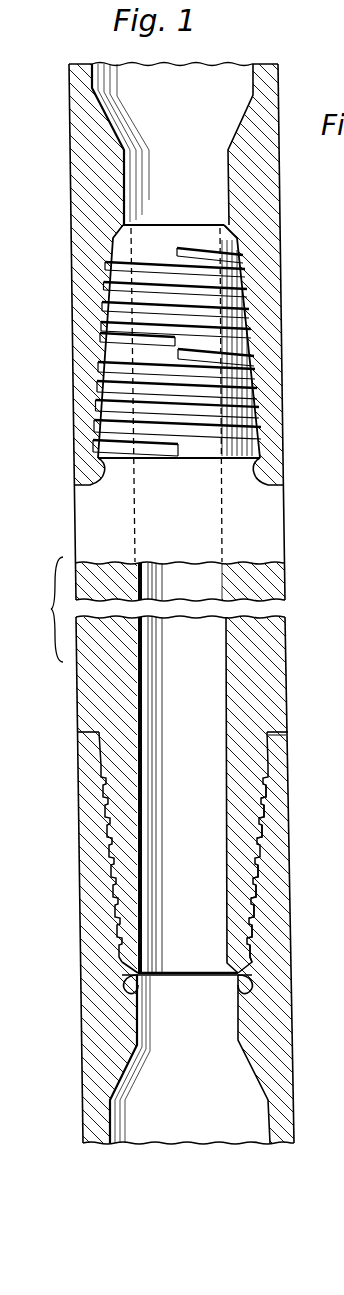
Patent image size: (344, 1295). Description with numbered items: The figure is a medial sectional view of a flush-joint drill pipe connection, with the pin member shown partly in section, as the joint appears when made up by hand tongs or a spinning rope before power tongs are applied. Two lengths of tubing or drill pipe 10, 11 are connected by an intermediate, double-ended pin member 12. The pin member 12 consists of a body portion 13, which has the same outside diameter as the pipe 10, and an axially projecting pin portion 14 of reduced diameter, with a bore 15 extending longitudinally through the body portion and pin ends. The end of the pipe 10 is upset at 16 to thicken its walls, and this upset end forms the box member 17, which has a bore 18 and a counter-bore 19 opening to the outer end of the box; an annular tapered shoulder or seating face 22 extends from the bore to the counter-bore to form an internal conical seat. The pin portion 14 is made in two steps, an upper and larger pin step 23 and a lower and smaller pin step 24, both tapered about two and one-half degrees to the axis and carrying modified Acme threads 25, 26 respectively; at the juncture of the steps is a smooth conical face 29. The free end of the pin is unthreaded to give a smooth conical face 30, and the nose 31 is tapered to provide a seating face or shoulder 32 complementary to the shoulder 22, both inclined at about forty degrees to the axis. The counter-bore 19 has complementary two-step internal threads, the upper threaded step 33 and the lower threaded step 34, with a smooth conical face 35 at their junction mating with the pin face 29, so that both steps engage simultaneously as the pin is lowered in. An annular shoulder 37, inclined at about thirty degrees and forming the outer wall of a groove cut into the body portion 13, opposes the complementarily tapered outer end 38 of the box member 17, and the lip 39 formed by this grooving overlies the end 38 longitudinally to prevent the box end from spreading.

The length of tubing or drill pipe 10 is at (105, 1075).
The length of tubing or drill pipe 11 is at (75, 117).
The pin member 12 is at (67, 519).
The body portion 13 is at (262, 527).
The pin portion 14 is at (128, 840).
The bore 15 is at (174, 795).
The upset portion 16 is at (120, 1040).
The box member 17 is at (75, 917).
The bore 18 is at (159, 1059).
The counter-bore 19 is at (111, 857).
The tapered shoulder or seating face 22 is at (232, 975).
The upper pin step 23 is at (250, 785).
The lower pin step 24 is at (250, 905).
The threads 25 is at (270, 812).
The threads 26 is at (263, 887).
The smooth conical face 29 is at (250, 850).
The smooth conical face 30 is at (250, 943).
The nose 31 is at (140, 965).
The seating face or shoulder 32 is at (140, 990).
The upper threaded step 33 is at (270, 787).
The lower threaded step 34 is at (263, 915).
The smooth conical face 35 is at (268, 833).
The annular shoulder 37 is at (270, 731).
The outer end of box member 38 is at (95, 733).
The lip 39 is at (288, 735).